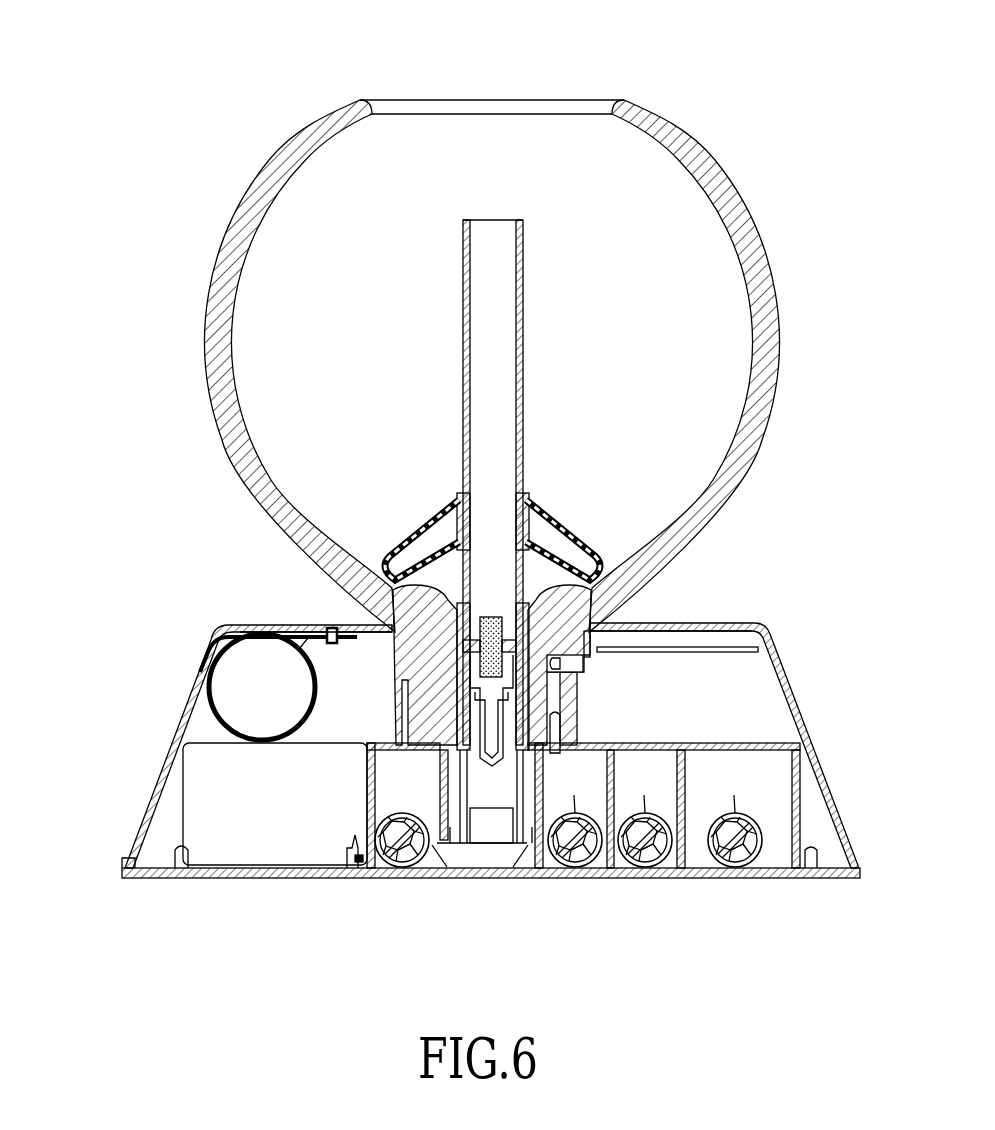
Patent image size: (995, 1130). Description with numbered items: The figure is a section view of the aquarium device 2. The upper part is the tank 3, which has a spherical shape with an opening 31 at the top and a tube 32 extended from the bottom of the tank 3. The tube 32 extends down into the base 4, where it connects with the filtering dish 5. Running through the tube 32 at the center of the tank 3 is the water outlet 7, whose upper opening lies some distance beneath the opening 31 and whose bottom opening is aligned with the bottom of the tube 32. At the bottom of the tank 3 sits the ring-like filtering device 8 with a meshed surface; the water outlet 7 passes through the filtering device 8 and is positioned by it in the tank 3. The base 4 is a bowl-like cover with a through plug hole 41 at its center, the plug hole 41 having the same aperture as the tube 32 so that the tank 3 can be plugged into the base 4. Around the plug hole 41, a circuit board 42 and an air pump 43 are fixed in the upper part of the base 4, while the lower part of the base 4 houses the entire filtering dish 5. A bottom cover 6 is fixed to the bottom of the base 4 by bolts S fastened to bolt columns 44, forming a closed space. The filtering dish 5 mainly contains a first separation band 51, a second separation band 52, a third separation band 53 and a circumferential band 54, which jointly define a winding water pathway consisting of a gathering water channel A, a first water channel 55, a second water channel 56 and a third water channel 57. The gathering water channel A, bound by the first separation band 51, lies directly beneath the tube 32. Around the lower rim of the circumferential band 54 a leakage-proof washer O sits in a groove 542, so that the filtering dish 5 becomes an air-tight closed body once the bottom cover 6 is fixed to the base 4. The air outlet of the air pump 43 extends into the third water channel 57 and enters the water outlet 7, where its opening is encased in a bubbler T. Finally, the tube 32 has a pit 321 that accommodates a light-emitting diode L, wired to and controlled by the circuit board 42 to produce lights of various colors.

The aquarium device 2 is at (172, 110).
The tank 3 is at (218, 298).
The opening 31 is at (366, 99).
The tube 32 is at (417, 665).
The pit 321 is at (672, 650).
The base 4 is at (785, 653).
The plug hole 41 is at (280, 625).
The circuit board 42 is at (757, 626).
The air pump 43 is at (228, 672).
The bolt columns 44 is at (170, 855).
The filtering dish 5 is at (753, 743).
The first separation band 51 is at (543, 878).
The second separation band 52 is at (620, 878).
The third separation band 53 is at (682, 878).
The circumferential band 54 is at (800, 805).
The groove 542 is at (350, 878).
The first water channel 55 is at (582, 878).
The second water channel 56 is at (652, 878).
The third water channel 57 is at (723, 878).
The bottom cover 6 is at (757, 878).
The water outlet 7 is at (463, 447).
The filtering device 8 is at (323, 548).
The bubbler T is at (505, 612).
The light-emitting diode L is at (567, 663).
The bolts S is at (175, 870).
The leakage-proof washer O is at (370, 878).
The gathering water channel A is at (445, 878).